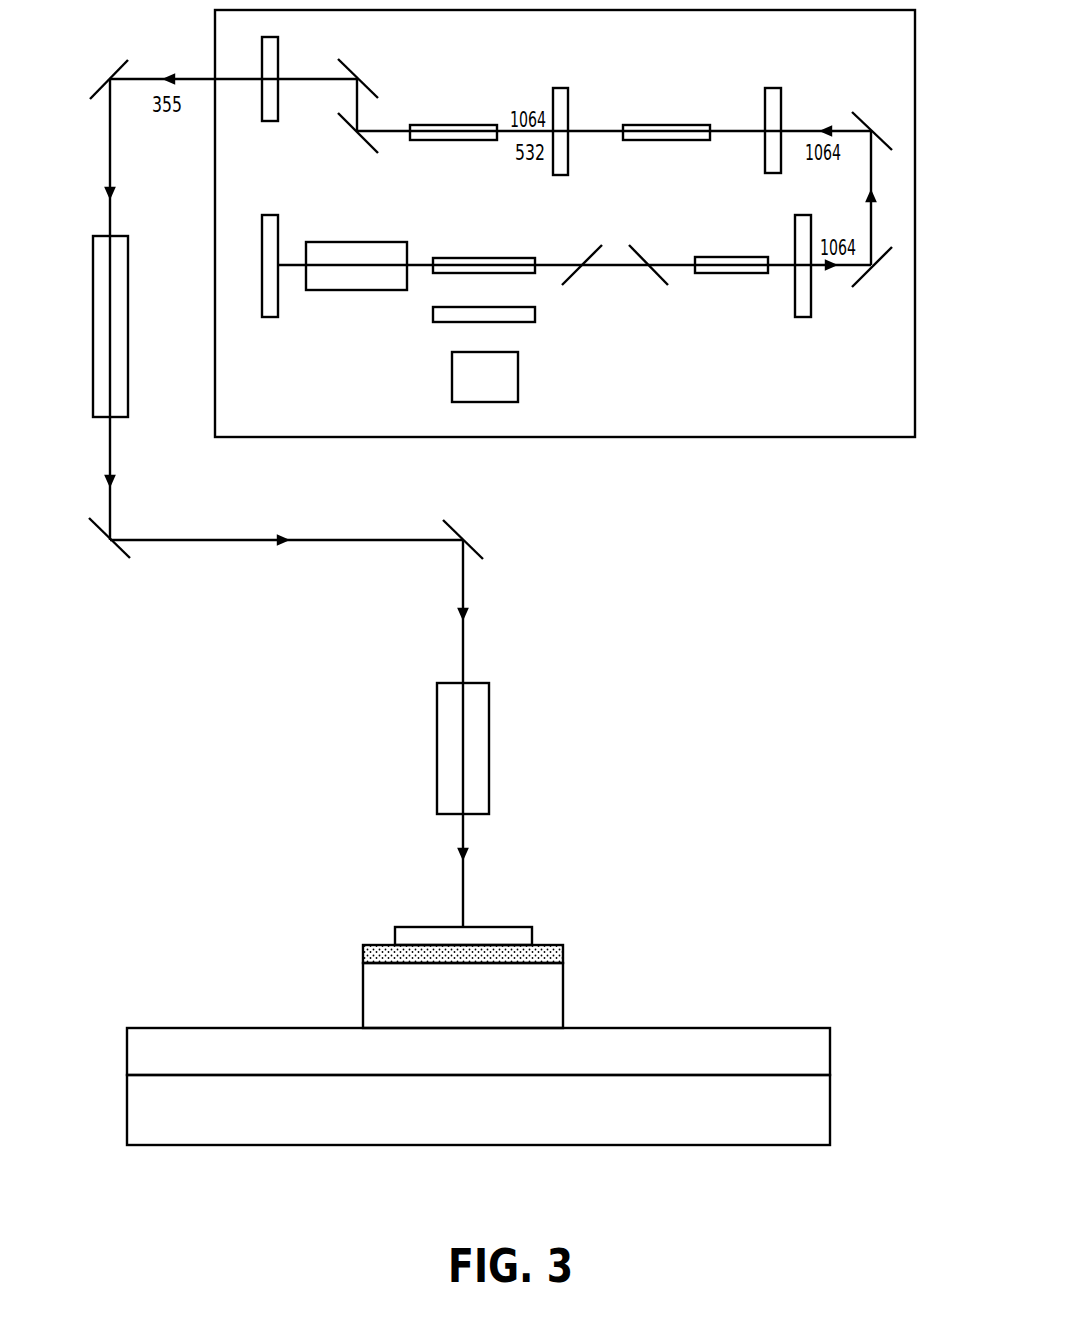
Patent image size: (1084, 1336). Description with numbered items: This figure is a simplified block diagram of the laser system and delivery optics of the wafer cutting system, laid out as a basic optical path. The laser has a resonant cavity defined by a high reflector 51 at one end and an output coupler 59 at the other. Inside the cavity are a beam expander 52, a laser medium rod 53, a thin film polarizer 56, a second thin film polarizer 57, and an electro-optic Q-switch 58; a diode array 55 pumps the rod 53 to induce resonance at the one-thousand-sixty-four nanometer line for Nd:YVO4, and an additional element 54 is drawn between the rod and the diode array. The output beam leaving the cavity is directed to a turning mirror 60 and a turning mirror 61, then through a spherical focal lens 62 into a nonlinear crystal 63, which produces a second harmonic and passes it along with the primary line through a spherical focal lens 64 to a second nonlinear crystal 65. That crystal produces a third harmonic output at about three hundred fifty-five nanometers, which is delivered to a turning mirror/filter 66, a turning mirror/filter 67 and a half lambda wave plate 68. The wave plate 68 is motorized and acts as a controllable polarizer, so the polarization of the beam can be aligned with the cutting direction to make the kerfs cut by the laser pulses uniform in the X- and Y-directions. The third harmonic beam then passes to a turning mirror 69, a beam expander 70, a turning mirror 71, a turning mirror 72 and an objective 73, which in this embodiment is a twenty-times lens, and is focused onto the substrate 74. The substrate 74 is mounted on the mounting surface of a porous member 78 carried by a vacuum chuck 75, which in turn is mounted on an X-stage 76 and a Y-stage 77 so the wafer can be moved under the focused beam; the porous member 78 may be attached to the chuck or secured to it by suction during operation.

The high reflector 51 is at (270, 317).
The beam expander 52 is at (357, 290).
The laser medium rod 53 is at (487, 258).
The Q-switch / etalon 54 is at (481, 322).
The diode array 55 is at (481, 402).
The thin film polarizer 56 is at (567, 283).
The thin film polarizer 57 is at (663, 283).
The electro-optic Q-switch 58 is at (745, 273).
The output coupler 59 is at (803, 317).
The turning mirror 60 is at (858, 284).
The turning mirror 61 is at (858, 115).
The spherical focal lens 62 is at (773, 173).
The nonlinear crystal 63 is at (668, 140).
The spherical focal lens 64 is at (560, 175).
The second nonlinear crystal 65 is at (455, 140).
The turning mirror/filter 66 is at (356, 137).
The turning mirror/filter 67 is at (342, 62).
The half lambda wave plate 68 is at (270, 121).
The turning mirror 69 is at (102, 84).
The beam expander 70 is at (128, 381).
The turning mirror 71 is at (104, 543).
The turning mirror 72 is at (475, 539).
The objective 73 is at (489, 759).
The substrate 74 is at (510, 927).
The vacuum chuck 75 is at (563, 997).
The X-stage 76 is at (830, 1058).
The Y-stage 77 is at (830, 1118).
The porous member 78 is at (363, 955).